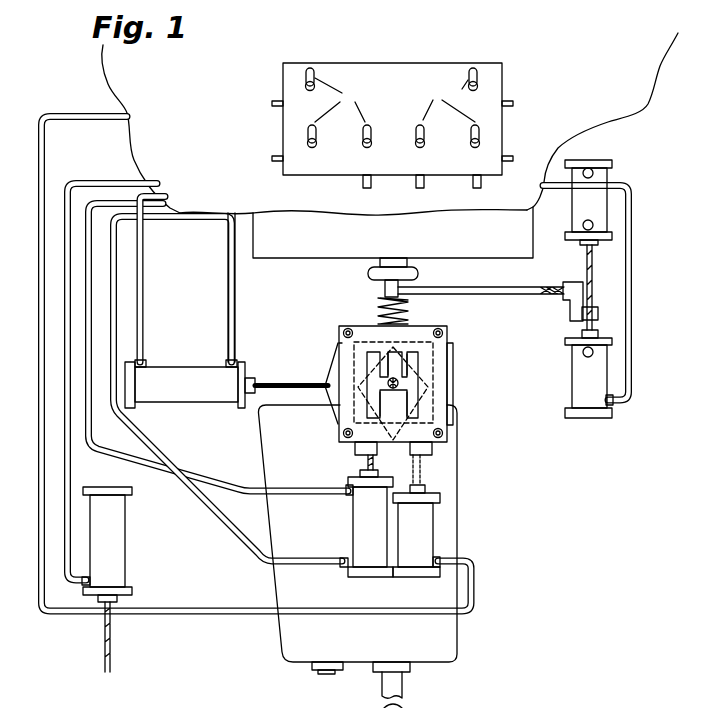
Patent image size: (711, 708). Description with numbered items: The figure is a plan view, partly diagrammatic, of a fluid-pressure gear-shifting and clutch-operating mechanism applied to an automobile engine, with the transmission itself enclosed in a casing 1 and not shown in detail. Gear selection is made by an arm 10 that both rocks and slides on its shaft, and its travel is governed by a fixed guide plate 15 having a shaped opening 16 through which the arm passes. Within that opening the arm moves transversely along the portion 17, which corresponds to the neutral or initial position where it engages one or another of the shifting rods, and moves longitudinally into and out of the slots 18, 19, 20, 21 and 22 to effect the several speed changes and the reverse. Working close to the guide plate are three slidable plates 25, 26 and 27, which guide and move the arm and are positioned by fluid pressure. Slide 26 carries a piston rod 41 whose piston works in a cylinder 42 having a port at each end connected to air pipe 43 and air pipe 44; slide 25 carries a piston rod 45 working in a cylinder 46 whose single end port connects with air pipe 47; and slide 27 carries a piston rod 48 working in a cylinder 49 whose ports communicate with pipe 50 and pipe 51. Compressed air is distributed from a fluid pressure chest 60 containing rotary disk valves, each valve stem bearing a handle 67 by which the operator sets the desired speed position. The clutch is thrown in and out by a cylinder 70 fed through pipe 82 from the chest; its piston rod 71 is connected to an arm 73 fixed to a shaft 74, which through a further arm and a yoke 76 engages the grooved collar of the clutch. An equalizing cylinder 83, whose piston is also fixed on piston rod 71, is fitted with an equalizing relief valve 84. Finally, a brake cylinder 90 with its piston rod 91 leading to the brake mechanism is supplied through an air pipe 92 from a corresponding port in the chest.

The casing 1 is at (442, 633).
The arm 10 is at (426, 387).
The fixed guide plate 15 is at (425, 368).
The opening 16 is at (377, 384).
The portion of slot 17 is at (400, 385).
The slot 18 is at (418, 403).
The slot 19 is at (373, 356).
The slot 20 is at (376, 408).
The slot 21 is at (398, 352).
The slot 22 is at (411, 357).
The slidable plate 25 is at (432, 449).
The slidable plate 26 is at (355, 449).
The slidable plate 27 is at (328, 409).
The piston rod 41 is at (368, 463).
The cylinder 42 is at (366, 513).
The air pipe 43 is at (336, 564).
The air pipe 44 is at (332, 491).
The piston rod 45 is at (422, 471).
The cylinder 46 is at (421, 511).
The air pipe 47 is at (40, 350).
The piston rod 48 is at (300, 382).
The cylinder 49 is at (165, 369).
The pipe 50 is at (236, 342).
The pipe 51 is at (143, 340).
The fluid pressure chest 60 is at (401, 64).
The handle 67 is at (395, 100).
The cylinder 70 is at (581, 379).
The piston rod 71 is at (594, 288).
The arm 73 is at (573, 320).
The shaft 74 is at (481, 304).
The yoke 76 is at (418, 275).
The pipe 82 is at (630, 373).
The equalizing cylinder 83 is at (584, 207).
The equalizing relief valve 84 is at (596, 173).
The brake cylinder 90 is at (116, 561).
The piston rod 91 is at (111, 650).
The air pipe 92 is at (72, 488).